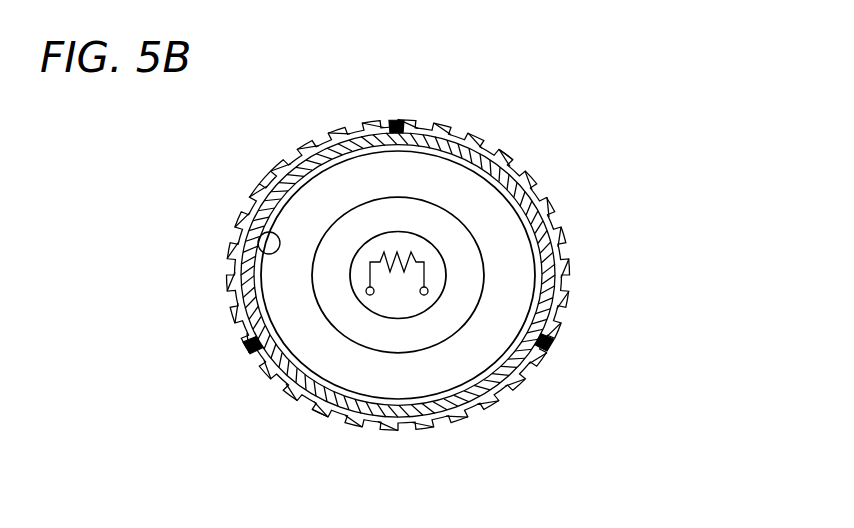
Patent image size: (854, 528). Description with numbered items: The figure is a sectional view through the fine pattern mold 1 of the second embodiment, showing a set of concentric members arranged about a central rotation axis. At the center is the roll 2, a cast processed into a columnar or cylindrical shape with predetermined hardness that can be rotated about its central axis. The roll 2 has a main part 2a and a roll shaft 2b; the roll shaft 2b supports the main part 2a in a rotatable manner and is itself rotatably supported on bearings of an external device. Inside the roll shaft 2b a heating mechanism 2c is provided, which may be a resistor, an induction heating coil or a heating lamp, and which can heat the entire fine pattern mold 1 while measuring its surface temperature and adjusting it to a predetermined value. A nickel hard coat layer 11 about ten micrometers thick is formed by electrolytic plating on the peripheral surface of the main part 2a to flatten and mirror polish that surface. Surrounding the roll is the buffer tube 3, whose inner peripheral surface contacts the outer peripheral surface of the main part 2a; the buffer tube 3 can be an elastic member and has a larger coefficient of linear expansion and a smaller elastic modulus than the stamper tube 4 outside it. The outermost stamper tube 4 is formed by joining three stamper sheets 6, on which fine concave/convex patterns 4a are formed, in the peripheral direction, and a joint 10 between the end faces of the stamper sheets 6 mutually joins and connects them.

The fine pattern mold 1 is at (631, 109).
The roll 2 is at (636, 238).
The main part 2a is at (525, 252).
The roll shaft 2b is at (470, 277).
The heating mechanism 2c is at (426, 279).
The buffer tube 3 is at (285, 392).
The stamper tube 4 is at (477, 427).
The fine concave/convex patterns 4a is at (441, 424).
The stamper sheets 6 is at (508, 151).
The joint 10 is at (398, 119).
The nickel hard coat layer 11 is at (258, 236).